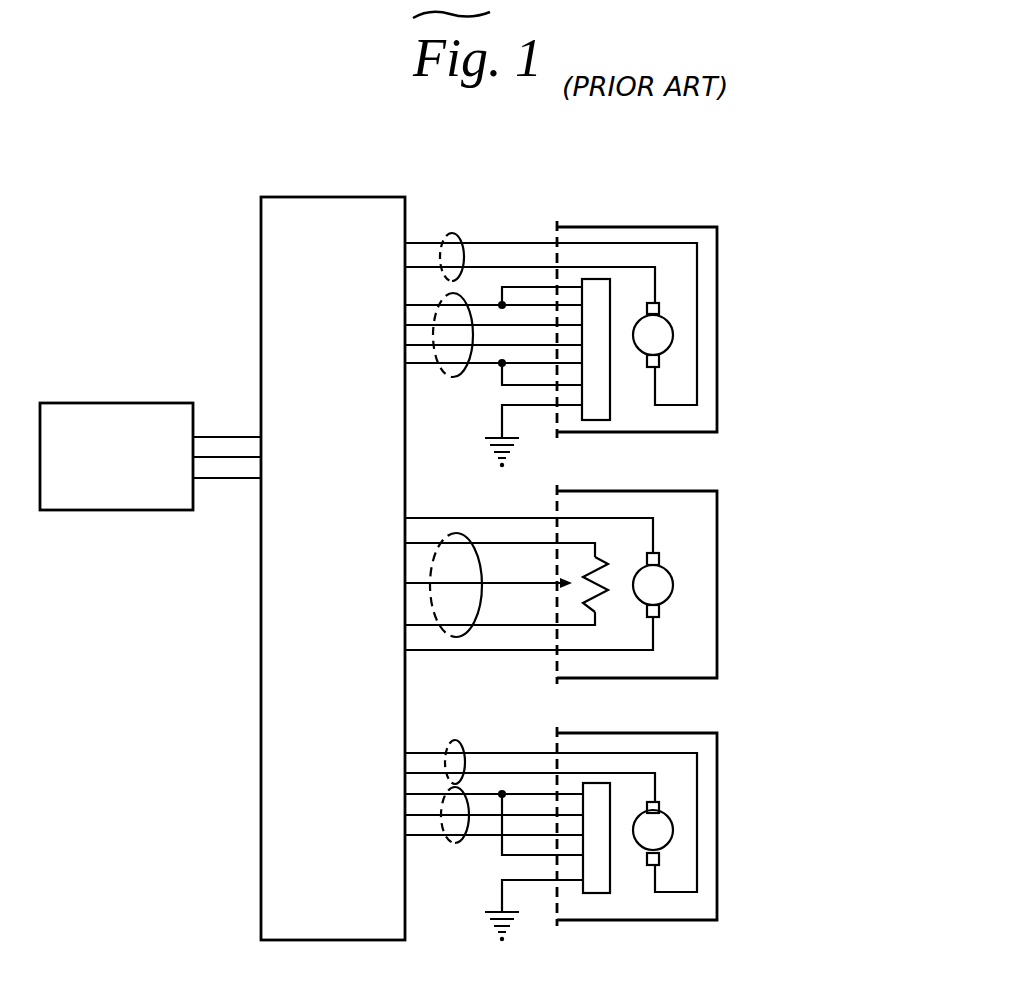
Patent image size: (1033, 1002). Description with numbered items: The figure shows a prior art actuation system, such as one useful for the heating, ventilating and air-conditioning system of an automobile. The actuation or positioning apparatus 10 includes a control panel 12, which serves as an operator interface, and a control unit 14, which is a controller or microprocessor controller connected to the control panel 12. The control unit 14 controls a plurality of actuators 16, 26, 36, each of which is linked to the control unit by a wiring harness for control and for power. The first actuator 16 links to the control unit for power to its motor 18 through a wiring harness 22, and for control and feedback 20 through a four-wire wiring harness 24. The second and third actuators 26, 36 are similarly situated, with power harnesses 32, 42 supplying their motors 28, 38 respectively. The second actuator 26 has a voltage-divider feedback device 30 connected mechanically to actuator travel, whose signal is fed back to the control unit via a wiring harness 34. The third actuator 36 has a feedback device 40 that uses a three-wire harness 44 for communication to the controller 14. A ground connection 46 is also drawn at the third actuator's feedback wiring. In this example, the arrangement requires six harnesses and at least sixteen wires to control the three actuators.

The actuation or positioning apparatus 10 is at (191, 222).
The control panel 12 is at (136, 403).
The control unit 14 is at (261, 278).
The actuator 16 is at (670, 345).
The motor 18 is at (673, 335).
The control and feedback 20 is at (610, 408).
The wiring harness 22 is at (452, 233).
The 4-wire wiring harness 24 is at (455, 378).
The actuator 26 is at (594, 584).
The motor 28 is at (673, 585).
The voltage-divider feedback device 30 is at (603, 612).
The power harness 32 is at (440, 518).
The wiring harness 34 is at (482, 606).
The actuator 36 is at (670, 826).
The motor 38 is at (673, 830).
The feedback device 40 is at (610, 878).
The power harness 42 is at (458, 742).
The 3-wire harness 44 is at (455, 844).
The ground connection 46 is at (514, 928).